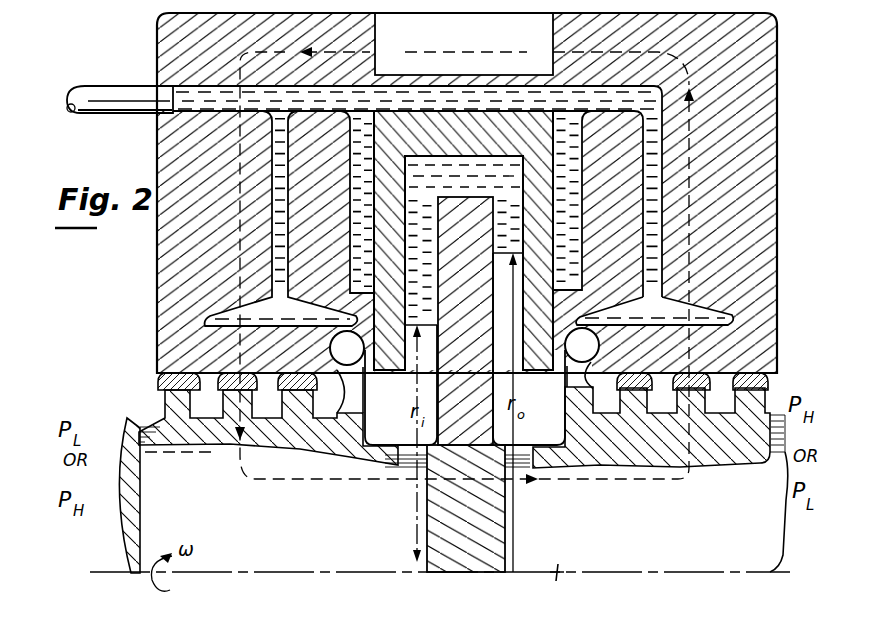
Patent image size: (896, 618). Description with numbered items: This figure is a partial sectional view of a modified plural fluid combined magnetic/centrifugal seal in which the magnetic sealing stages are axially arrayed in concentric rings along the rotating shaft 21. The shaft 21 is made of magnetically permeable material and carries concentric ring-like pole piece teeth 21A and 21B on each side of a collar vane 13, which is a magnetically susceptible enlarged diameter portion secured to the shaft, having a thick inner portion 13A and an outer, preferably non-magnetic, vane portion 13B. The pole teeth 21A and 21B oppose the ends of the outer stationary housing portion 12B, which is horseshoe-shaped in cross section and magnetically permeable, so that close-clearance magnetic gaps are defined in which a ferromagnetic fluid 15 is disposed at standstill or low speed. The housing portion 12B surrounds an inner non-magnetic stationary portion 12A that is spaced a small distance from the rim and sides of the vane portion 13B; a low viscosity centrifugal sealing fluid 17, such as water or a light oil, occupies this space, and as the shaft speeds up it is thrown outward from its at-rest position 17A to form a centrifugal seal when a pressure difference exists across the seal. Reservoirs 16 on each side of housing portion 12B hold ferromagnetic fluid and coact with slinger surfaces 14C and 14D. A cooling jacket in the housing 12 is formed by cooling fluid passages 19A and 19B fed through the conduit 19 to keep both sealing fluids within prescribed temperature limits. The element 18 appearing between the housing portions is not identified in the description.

The housing 12 is at (781, 100).
The inner stationary portion 12A is at (522, 156).
The outer stationary housing portion 12B is at (206, 234).
The collar vane 13 is at (445, 547).
The inner portion of collar vane 13A is at (484, 516).
The vane portion 13B is at (481, 346).
The slinger surface 14C is at (583, 393).
The slinger surface 14D is at (357, 366).
The ferromagnetic fluid 15 is at (176, 372).
The reservoir 16 is at (333, 348).
The centrifugal sealing fluid 17 is at (463, 180).
The at-rest position of centrifugal fluid 17A is at (403, 434).
The permanent magnet 18 is at (476, 42).
The conduit 19 is at (108, 90).
The cooling fluid passage 19A is at (358, 183).
The cooling fluid passage 19B is at (570, 166).
The shaft 21 is at (133, 422).
The pole piece teeth 21A is at (672, 390).
The pole piece teeth 21B is at (160, 395).